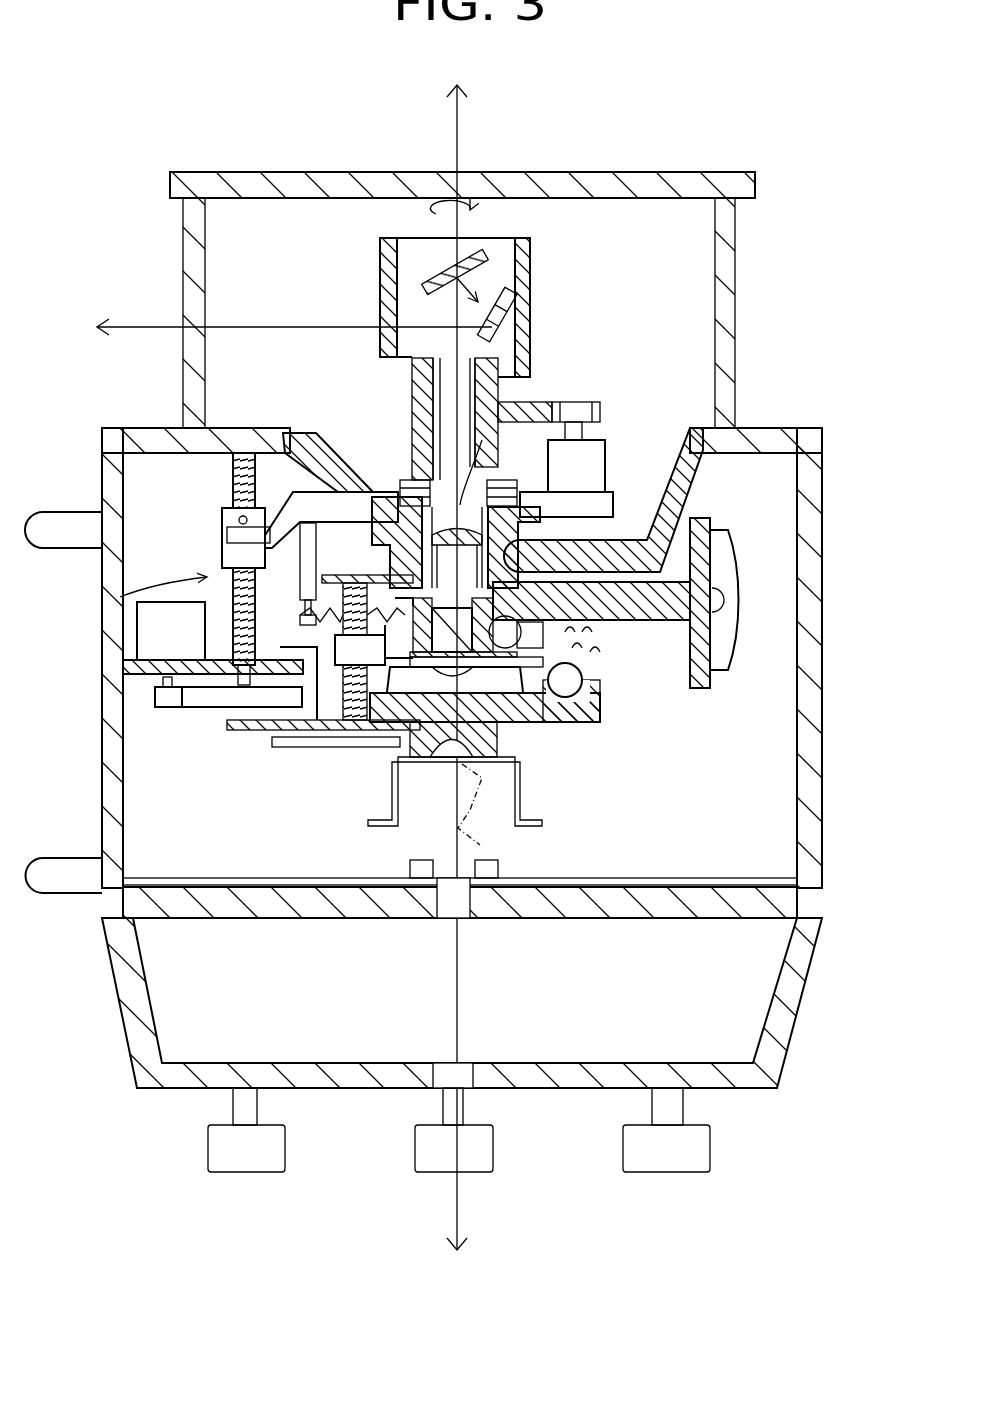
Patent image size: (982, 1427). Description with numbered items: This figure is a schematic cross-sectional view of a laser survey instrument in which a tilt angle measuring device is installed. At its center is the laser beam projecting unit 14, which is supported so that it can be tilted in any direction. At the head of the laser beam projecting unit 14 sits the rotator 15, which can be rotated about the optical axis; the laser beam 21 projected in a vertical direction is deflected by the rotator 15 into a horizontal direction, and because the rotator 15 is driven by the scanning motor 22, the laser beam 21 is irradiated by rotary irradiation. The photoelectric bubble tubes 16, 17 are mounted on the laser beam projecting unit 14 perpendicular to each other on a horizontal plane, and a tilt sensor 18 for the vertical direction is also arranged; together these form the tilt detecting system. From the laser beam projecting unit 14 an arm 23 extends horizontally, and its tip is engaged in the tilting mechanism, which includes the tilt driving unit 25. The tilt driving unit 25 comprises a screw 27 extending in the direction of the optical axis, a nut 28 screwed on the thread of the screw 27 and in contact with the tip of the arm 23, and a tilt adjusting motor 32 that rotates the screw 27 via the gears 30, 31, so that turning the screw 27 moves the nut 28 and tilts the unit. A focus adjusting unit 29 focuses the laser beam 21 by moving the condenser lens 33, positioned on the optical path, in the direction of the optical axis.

The laser beam projecting unit 14 is at (530, 532).
The rotator 15 is at (530, 283).
The photoelectric bubble tube 16 is at (400, 672).
The photoelectric bubble tube 17 is at (590, 677).
The tilt sensor 18 is at (733, 653).
The laser beam 21 is at (255, 327).
The scanning motor 22 is at (612, 460).
The arm 23 is at (345, 500).
The tilt driving unit 25 is at (120, 597).
The screw 27 is at (233, 470).
The nut 28 is at (222, 545).
The focus adjusting unit 29 is at (330, 700).
The gear 30 is at (163, 703).
The gear 31 is at (215, 703).
The tilt adjusting motor 32 is at (150, 632).
The condenser lens 33 is at (520, 400).